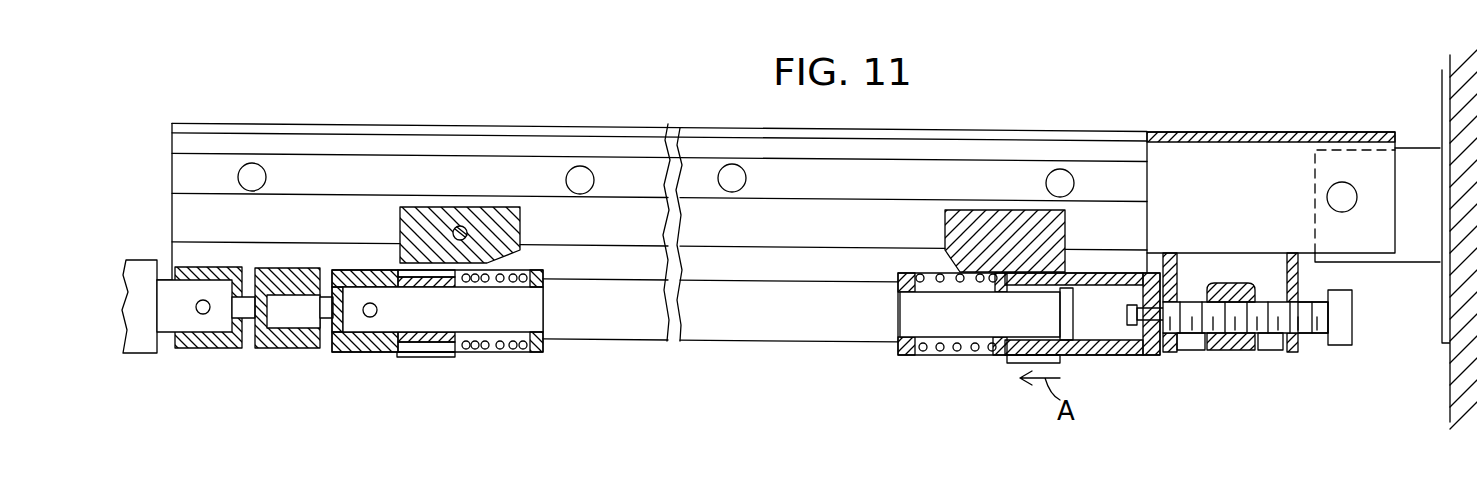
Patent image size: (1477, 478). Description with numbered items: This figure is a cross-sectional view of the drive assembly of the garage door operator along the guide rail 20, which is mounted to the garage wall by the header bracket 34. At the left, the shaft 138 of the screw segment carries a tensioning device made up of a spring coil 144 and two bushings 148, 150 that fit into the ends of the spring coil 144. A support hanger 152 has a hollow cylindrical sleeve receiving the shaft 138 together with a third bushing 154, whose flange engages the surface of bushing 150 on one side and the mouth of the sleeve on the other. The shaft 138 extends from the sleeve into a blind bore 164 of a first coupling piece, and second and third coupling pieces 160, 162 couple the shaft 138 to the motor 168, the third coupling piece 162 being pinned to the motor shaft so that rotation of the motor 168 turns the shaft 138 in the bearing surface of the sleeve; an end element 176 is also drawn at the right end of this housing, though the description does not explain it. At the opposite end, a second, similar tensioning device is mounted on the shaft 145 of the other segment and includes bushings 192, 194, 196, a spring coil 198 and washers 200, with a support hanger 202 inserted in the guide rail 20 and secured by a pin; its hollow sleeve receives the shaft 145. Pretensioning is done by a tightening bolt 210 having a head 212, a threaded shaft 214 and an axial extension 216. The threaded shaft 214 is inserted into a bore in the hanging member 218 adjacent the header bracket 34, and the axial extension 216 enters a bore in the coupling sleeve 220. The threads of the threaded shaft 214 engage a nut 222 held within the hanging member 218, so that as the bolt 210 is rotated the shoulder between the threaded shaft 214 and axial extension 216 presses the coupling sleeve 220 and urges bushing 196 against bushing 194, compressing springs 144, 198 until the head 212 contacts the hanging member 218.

The guide rail 20 is at (1017, 138).
The header bracket 34 is at (1415, 157).
The shaft 138 is at (460, 348).
The spring coil 144 is at (497, 351).
The shaft 145 is at (997, 312).
The bushing 148 is at (525, 334).
The bushing 150 is at (482, 351).
The support hanger 152 is at (520, 223).
The third bushing 154 is at (450, 357).
The second coupling piece 160 is at (277, 347).
The third coupling piece 162 is at (193, 345).
The blind bore 164 is at (355, 349).
The motor 168 is at (143, 268).
The end cap 176 is at (543, 345).
The bushing 192 is at (922, 313).
The bushing 194 is at (990, 352).
The bushing 196 is at (1037, 340).
The spring coil 198 is at (958, 352).
The washers 200 is at (997, 272).
The support hanger 202 is at (1055, 237).
The tightening bolt 210 is at (1309, 373).
The head 212 is at (1338, 290).
The threaded shaft 214 is at (1312, 334).
The axial extension 216 is at (1127, 312).
The hanging member 218 is at (1285, 280).
The coupling sleeve 220 is at (1142, 355).
The nut 222 is at (1230, 343).